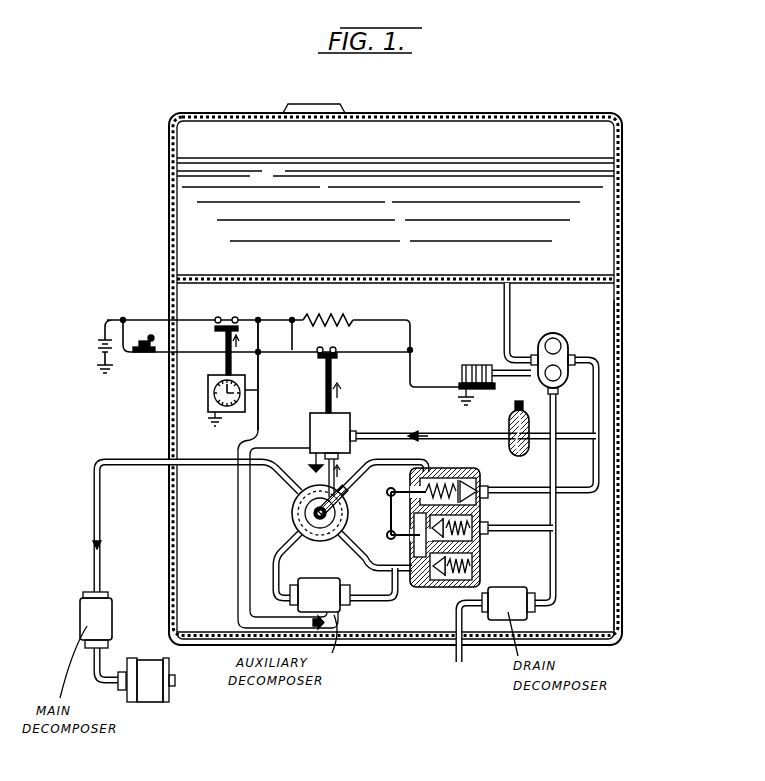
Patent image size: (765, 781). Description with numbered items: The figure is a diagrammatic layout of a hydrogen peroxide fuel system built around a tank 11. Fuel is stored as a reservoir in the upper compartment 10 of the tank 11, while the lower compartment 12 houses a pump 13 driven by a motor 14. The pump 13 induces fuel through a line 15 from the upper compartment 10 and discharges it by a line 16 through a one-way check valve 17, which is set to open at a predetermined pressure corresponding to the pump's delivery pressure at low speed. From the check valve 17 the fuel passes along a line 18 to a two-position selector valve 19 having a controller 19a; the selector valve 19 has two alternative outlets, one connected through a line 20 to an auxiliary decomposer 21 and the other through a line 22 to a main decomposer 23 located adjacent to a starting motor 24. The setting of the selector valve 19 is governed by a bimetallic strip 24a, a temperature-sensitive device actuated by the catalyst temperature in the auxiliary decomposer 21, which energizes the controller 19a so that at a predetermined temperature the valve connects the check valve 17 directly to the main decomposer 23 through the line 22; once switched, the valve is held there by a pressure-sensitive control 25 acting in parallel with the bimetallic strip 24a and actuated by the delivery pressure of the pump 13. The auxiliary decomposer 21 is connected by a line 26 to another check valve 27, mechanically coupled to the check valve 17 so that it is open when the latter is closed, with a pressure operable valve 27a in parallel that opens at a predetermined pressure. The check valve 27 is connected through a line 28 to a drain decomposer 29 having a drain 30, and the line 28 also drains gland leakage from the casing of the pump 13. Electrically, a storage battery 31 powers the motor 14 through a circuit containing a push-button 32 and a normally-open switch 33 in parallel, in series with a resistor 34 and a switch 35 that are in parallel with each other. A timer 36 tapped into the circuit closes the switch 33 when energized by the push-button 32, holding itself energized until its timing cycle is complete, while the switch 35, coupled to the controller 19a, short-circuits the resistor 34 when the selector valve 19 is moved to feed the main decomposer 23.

The upper compartment 10 is at (623, 220).
The tank 11 is at (626, 405).
The lower compartment 12 is at (624, 517).
The pump 13 is at (556, 333).
The motor 14 is at (470, 364).
The line 15 is at (503, 299).
The line 16 is at (603, 477).
The one-way check valve 17 is at (447, 478).
The line 18 is at (372, 481).
The two-position selector valve 19 is at (292, 517).
The controller 19a is at (347, 420).
The line 20 is at (386, 513).
The auxiliary decomposer 21 is at (329, 578).
The line 22 is at (196, 467).
The main decomposer 23 is at (113, 607).
The starting motor 24 is at (148, 657).
The bimetallic strip 24a is at (288, 474).
The pressure-sensitive control 25 is at (508, 418).
The line 26 is at (381, 596).
The check valve 27 is at (484, 521).
The pressure operable valve 27a is at (484, 549).
The line 28 is at (557, 572).
The drain decomposer 29 is at (503, 590).
The drain 30 is at (456, 619).
The storage battery 31 is at (109, 362).
The push-button 32 is at (144, 346).
The normally-open switch 33 is at (229, 318).
The resistor 34 is at (351, 318).
The switch 35 is at (336, 348).
The timer 36 is at (247, 399).